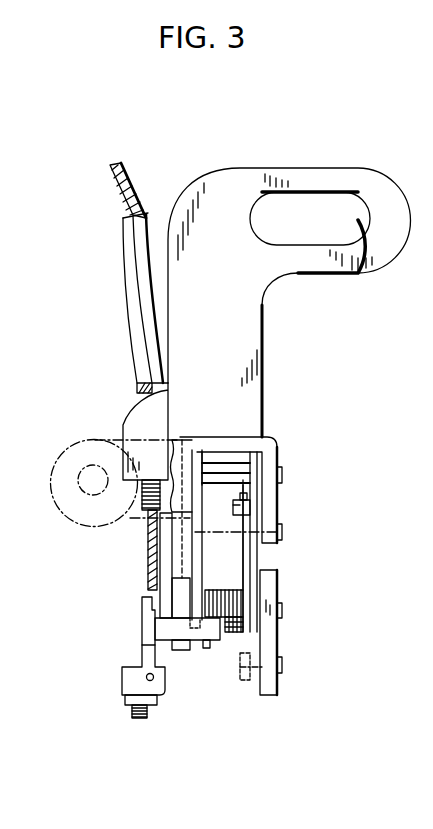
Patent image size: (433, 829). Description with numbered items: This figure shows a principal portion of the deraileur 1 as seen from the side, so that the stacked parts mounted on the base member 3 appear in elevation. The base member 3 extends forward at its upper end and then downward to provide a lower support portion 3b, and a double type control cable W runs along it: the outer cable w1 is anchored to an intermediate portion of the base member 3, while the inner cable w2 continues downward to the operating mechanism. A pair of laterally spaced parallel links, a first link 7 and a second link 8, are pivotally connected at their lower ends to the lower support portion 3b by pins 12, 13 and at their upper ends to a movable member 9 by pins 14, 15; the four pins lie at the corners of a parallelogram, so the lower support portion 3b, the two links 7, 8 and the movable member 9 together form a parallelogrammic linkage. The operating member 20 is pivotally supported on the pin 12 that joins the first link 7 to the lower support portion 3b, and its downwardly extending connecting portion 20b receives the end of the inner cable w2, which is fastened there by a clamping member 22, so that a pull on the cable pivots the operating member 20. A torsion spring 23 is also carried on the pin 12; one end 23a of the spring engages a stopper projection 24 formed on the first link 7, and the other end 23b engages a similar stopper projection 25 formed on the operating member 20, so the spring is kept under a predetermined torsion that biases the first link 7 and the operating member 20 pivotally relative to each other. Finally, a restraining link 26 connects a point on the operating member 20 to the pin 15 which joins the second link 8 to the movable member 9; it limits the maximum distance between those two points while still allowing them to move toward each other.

The deraileur 1 is at (266, 337).
The base member 3 is at (265, 372).
The lower support portion 3b is at (272, 592).
The first link 7 is at (228, 550).
The second link 8 is at (200, 570).
The movable member 9 is at (270, 447).
The pin 12 is at (150, 606).
The pin 13 is at (283, 665).
The pin 14 is at (283, 475).
The pin 15 is at (283, 532).
The operating member 20 is at (155, 630).
The connecting portion 20b is at (150, 655).
The clamping member 22 is at (145, 700).
The torsion spring 23 is at (235, 635).
The one end of the spring 23a is at (252, 497).
The other end of the spring 23b is at (205, 650).
The stopper projection 24 is at (240, 505).
The stopper projection 25 is at (183, 632).
The restraining link 26 is at (160, 555).
The control cable W is at (135, 285).
The outer cable w1 is at (125, 240).
The inner cable w2 is at (148, 535).